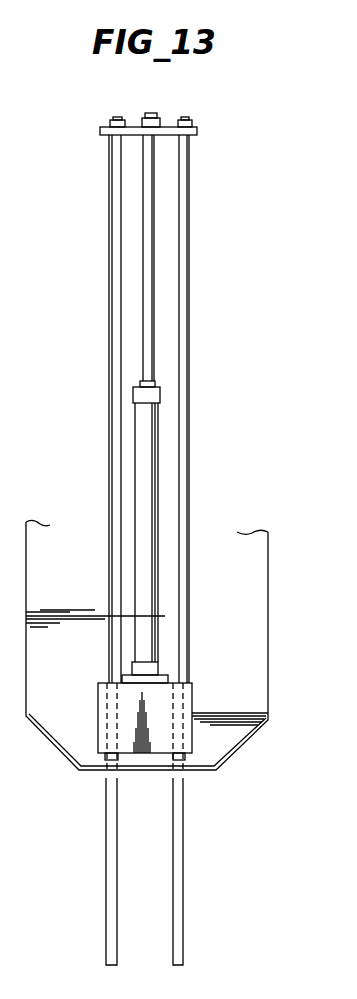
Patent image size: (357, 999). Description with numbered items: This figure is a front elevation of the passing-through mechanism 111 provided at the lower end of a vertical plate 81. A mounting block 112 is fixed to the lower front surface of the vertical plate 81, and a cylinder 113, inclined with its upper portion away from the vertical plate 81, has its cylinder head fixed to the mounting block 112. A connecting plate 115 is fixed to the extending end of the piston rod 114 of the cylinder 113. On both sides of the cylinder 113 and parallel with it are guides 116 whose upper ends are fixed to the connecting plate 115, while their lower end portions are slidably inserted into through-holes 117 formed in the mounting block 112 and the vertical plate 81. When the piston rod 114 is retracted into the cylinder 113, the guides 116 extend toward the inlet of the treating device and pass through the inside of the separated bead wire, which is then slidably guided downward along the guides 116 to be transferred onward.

The vertical plate 81 is at (248, 663).
The passing-through mechanism 111 is at (193, 421).
The mounting block 112 is at (150, 712).
The cylinder 113 is at (150, 458).
The piston rod 114 is at (154, 225).
The connecting plate 115 is at (168, 127).
The guides 116 is at (112, 292).
The through-holes 117 is at (110, 712).